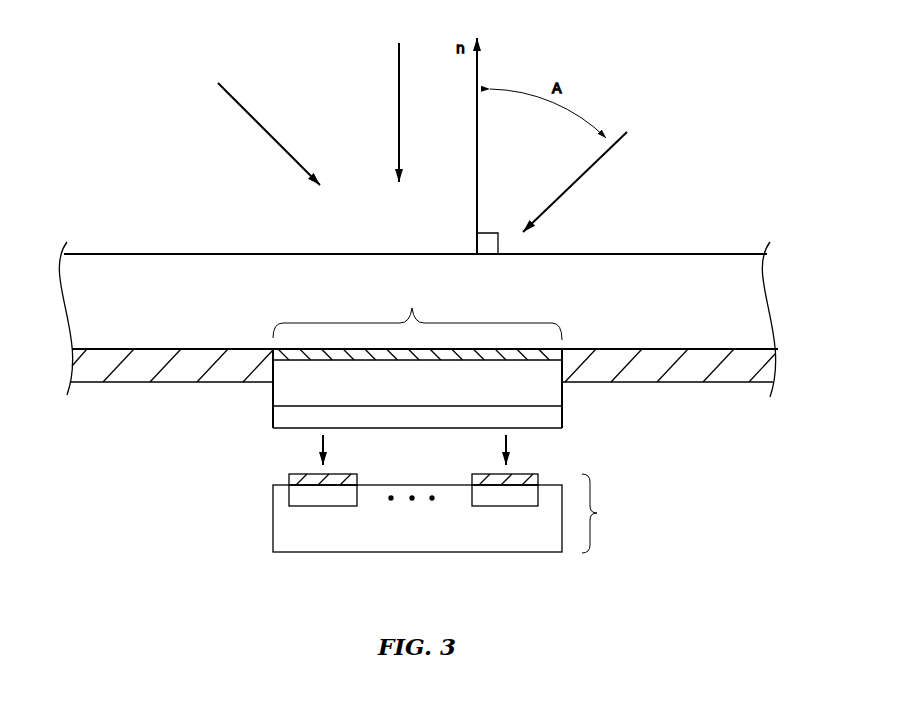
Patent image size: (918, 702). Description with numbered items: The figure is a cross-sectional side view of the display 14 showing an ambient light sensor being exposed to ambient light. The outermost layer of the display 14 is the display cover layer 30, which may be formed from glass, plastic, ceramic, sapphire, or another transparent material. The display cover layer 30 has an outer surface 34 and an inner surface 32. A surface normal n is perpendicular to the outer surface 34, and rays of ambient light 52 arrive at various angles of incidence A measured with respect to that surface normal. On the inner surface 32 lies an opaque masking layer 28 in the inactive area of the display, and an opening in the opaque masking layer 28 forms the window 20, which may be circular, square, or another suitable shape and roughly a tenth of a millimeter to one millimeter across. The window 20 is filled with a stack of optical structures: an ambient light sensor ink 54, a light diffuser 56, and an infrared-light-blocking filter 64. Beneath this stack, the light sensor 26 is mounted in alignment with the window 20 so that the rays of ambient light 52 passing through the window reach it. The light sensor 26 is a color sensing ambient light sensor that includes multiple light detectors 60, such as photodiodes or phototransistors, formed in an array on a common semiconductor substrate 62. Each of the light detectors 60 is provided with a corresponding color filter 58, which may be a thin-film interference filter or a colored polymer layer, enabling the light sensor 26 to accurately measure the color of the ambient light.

The display 14 is at (735, 151).
The window 20 is at (417, 359).
The light sensor 26 is at (505, 513).
The opaque masking layer 28 is at (173, 375).
The display cover layer 30 is at (776, 302).
The inner surface 32 is at (110, 349).
The outer surface 34 is at (683, 254).
The rays of ambient light 52 is at (265, 130).
The ambient light sensor ink 54 is at (557, 350).
The light diffuser 56 is at (273, 396).
The color filter 58 is at (470, 478).
The light detectors 60 is at (470, 504).
The substrate 62 is at (508, 542).
The infrared-light-blocking filter 64 is at (273, 418).